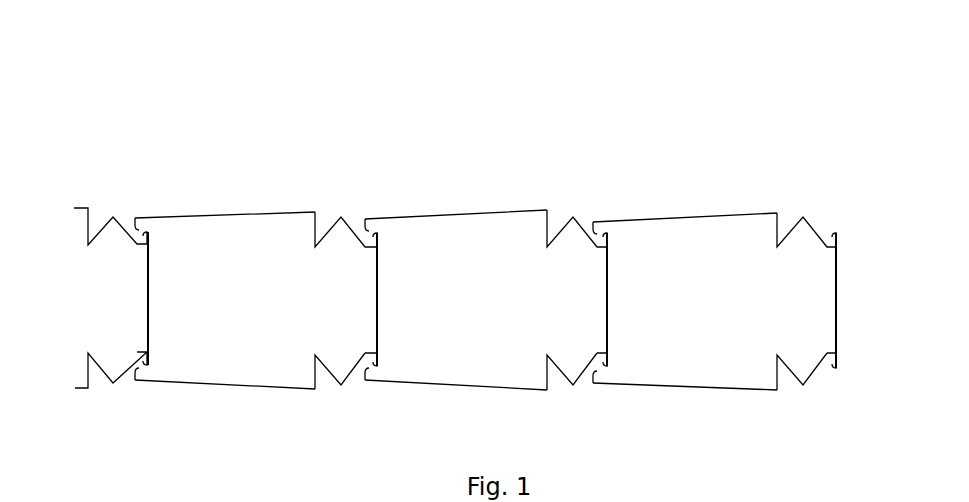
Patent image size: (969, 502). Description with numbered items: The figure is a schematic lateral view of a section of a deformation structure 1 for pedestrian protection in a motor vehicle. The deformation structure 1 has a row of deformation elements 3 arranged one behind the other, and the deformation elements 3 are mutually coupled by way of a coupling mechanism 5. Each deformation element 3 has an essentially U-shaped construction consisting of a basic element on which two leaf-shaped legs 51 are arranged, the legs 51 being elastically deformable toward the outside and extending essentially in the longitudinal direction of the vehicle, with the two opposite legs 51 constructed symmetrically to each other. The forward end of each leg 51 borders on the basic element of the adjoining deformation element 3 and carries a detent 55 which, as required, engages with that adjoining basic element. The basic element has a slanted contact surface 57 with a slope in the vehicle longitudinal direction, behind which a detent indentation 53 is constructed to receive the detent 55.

The deformation structure 1 is at (557, 88).
The deformation element 3 is at (74, 208).
The coupling mechanism 5 is at (583, 247).
The leg 51 is at (173, 218).
The detent indentation 53 is at (97, 214).
The detent 55 is at (136, 220).
The contact surface 57 is at (123, 222).